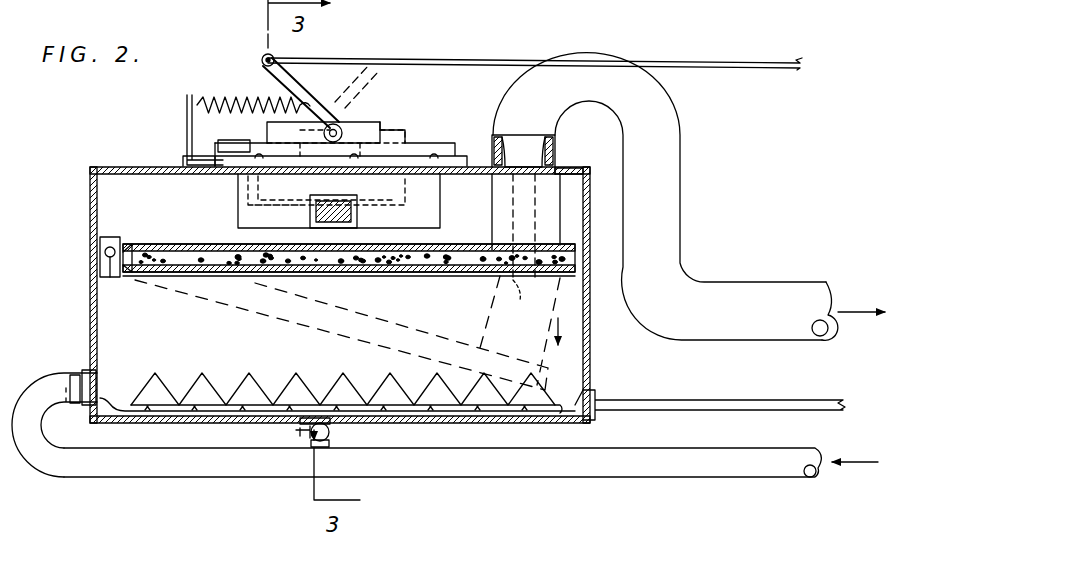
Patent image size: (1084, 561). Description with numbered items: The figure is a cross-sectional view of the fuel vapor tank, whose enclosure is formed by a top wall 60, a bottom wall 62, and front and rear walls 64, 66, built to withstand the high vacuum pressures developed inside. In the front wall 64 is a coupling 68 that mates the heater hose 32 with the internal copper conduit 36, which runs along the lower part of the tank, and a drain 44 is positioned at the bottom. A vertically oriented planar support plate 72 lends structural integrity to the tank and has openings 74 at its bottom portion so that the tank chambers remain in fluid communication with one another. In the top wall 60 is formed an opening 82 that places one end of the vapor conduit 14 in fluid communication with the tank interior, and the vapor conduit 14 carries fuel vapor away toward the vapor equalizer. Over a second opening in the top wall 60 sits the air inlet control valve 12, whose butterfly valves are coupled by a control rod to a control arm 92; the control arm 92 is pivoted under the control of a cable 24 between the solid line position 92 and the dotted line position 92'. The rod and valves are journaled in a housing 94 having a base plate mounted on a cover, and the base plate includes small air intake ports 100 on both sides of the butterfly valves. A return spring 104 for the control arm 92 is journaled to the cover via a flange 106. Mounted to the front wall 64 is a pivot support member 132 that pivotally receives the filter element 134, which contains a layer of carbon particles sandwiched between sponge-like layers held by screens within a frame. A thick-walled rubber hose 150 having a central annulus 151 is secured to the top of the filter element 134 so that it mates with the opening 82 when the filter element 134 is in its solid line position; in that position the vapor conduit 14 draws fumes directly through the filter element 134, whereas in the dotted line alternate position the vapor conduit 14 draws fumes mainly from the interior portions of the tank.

The air inlet control valve 12 is at (120, 121).
The vapor conduit 14 is at (668, 208).
The cable 24 is at (700, 62).
The heater hose 32 is at (596, 466).
The internal copper conduit 36 is at (205, 413).
The drain 44 is at (314, 444).
The top wall 60 is at (341, 291).
The bottom wall 62 is at (458, 418).
The front wall 64 is at (90, 318).
The rear wall 66 is at (592, 345).
The coupling 68 is at (82, 372).
The support plate 72 is at (575, 318).
The openings 74 is at (340, 412).
The opening 82 is at (540, 158).
The control arm 92 is at (305, 98).
The control arm dotted line position 92' is at (393, 86).
The housing 94 is at (402, 122).
The air intake ports 100 is at (248, 142).
The return spring 104 is at (243, 86).
The flange 106 is at (197, 152).
The pivot support member 132 is at (108, 278).
The filter element 134 is at (396, 268).
The thick-walled rubber hose 150 is at (494, 194).
The central annulus 151 is at (525, 298).